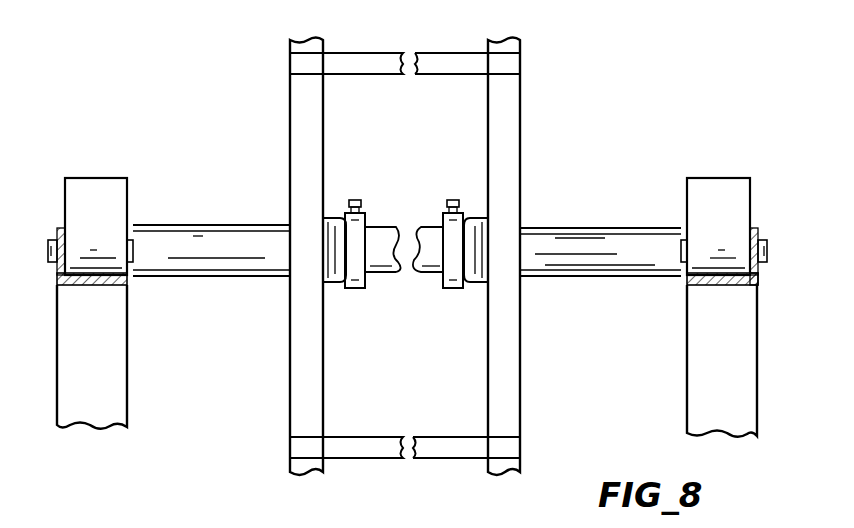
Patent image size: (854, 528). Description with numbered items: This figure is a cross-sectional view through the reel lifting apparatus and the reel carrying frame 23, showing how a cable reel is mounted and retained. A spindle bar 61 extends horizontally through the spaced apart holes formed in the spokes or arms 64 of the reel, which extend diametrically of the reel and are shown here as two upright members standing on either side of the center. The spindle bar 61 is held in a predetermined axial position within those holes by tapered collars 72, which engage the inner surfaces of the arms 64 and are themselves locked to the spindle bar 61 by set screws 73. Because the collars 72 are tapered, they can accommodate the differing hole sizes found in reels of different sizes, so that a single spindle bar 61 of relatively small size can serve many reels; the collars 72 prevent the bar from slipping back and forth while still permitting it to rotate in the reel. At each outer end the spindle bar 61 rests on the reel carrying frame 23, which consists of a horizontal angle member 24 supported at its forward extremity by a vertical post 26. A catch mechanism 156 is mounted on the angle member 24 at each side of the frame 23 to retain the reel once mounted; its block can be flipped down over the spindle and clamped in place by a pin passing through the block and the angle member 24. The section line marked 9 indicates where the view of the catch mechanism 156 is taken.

The section line 9- 9 is at (615, 195).
The reel support or carrying frame 23 is at (128, 351).
The horizontal angle member 24 is at (759, 279).
The vertical post 26 is at (752, 392).
The spindle bar 61 is at (230, 263).
The spokes or arms 64 is at (301, 149).
The tapered collar 72 is at (359, 224).
The set screw 73 is at (355, 200).
The catch mechanism 156 is at (95, 178).